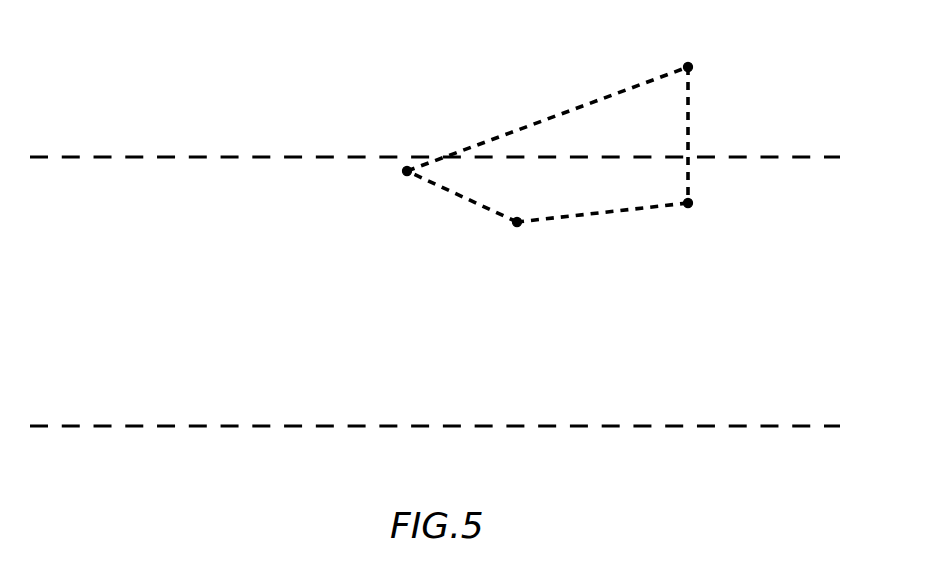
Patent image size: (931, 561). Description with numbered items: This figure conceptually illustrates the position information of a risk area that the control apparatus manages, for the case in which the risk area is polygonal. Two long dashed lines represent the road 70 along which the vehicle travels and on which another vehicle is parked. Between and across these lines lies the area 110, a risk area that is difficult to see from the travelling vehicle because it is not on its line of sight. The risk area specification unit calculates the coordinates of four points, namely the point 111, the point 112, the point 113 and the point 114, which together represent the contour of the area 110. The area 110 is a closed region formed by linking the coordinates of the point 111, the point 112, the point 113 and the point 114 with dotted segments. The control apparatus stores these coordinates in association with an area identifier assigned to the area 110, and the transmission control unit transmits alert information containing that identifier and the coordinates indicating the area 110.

The road 70 is at (162, 398).
The area 110 is at (598, 98).
The point 111 is at (405, 174).
The point 112 is at (518, 225).
The point 113 is at (688, 206).
The point 114 is at (688, 64).